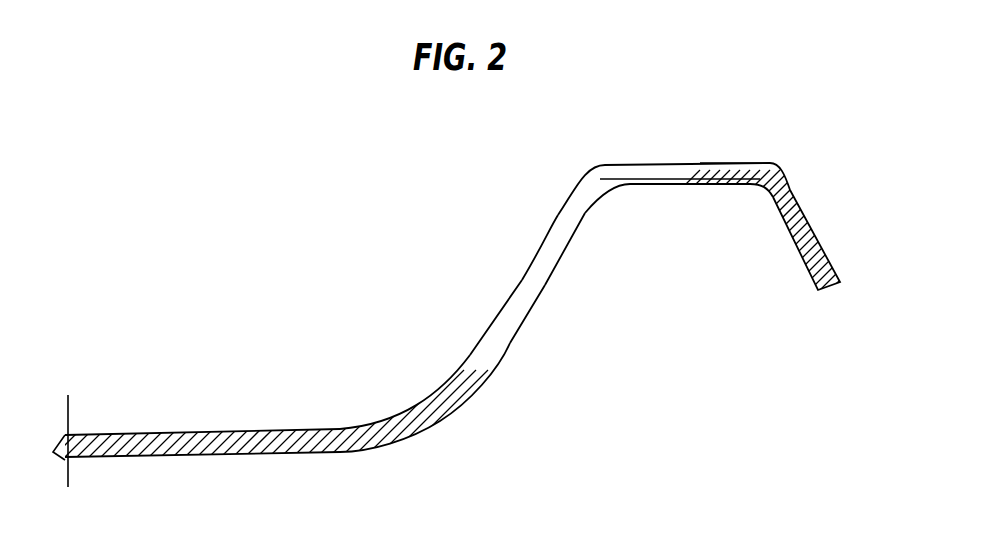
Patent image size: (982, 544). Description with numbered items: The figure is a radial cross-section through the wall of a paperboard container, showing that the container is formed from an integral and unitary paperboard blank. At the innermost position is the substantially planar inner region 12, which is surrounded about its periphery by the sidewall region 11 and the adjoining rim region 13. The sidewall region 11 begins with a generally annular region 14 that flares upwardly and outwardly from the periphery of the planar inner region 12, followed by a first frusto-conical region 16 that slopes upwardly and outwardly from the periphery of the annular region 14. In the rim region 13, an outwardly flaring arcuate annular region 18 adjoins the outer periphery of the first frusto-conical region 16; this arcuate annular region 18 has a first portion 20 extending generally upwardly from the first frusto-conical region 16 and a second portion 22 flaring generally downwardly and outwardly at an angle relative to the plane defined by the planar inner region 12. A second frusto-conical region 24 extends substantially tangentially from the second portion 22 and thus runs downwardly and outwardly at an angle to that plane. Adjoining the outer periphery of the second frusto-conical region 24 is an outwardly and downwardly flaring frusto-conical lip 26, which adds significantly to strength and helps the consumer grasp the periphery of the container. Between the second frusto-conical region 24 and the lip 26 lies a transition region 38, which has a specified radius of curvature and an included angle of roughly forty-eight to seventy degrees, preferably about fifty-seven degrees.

The sidewall region 11 is at (500, 302).
The planar inner region 12 is at (178, 435).
The rim region 13 is at (750, 154).
The annular region 14 is at (468, 372).
The first frusto-conical region 16 is at (548, 288).
The arcuate annular region 18 is at (578, 178).
The first portion 20 is at (562, 204).
The second portion 22 is at (623, 165).
The second frusto-conical region 24 is at (680, 164).
The frusto-conical lip 26 is at (812, 223).
The transition region 38 is at (777, 168).